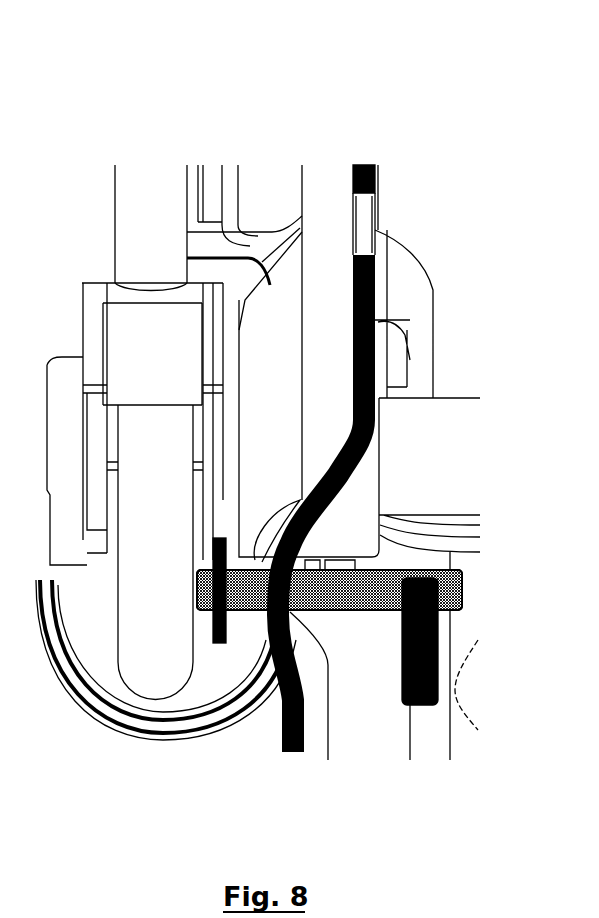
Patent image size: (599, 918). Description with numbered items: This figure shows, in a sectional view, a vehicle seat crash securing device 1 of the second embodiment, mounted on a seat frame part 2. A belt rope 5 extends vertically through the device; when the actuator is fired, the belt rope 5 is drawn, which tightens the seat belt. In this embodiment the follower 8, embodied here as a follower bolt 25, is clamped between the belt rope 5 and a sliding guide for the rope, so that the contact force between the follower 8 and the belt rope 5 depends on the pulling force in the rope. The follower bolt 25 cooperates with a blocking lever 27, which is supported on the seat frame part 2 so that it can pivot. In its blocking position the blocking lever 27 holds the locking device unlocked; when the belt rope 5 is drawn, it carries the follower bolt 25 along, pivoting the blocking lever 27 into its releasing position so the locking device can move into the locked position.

The vehicle seat crash securing device 1 is at (316, 118).
The seat frame part 2 is at (283, 750).
The belt rope 5 is at (158, 740).
The follower bolt 25 is at (462, 590).
The follower 8 is at (329, 590).
The blocking lever 27 is at (402, 668).